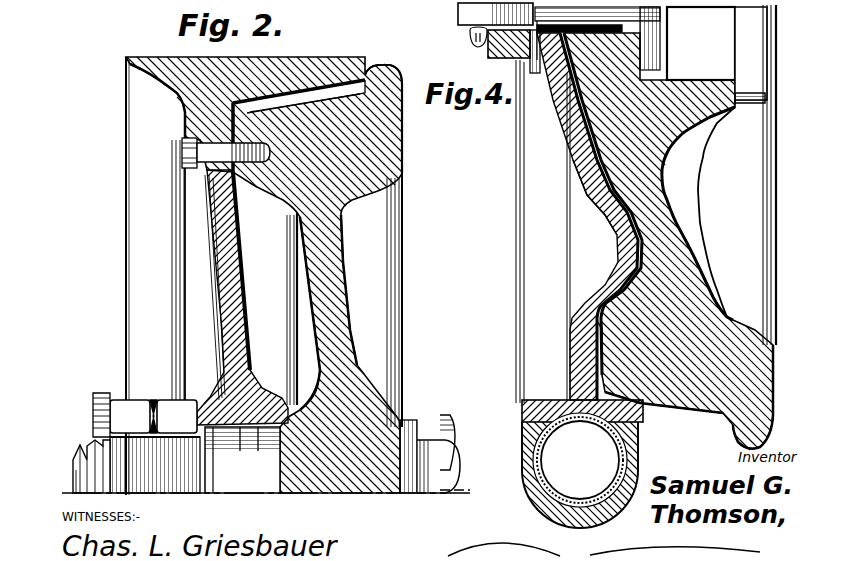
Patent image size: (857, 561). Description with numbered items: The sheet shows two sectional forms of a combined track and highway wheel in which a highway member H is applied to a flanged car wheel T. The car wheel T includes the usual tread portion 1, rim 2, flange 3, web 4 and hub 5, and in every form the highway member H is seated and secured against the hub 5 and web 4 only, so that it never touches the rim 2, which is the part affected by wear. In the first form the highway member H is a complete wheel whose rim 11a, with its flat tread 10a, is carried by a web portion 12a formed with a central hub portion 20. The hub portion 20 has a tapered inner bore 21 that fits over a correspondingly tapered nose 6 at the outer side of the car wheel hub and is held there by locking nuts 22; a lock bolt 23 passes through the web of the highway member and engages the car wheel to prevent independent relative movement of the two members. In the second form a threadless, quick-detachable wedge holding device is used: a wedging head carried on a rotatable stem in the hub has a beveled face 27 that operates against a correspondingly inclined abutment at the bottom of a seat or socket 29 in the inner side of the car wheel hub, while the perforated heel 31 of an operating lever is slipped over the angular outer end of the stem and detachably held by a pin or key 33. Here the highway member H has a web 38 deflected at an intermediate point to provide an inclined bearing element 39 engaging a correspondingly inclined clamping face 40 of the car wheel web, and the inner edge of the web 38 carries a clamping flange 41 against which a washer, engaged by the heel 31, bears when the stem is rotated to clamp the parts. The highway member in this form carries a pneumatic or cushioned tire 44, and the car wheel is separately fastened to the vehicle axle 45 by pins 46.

In FIG. 2, the tread portion 1 is at (336, 60).
In FIG. 4, the tread portion 1 is at (707, 413).
In FIG. 2, the rim 2 is at (252, 97).
In FIG. 4, the rim 2 is at (645, 406).
In FIG. 2, the flange 3 is at (390, 66).
In FIG. 4, the flange 3 is at (754, 427).
In FIG. 2, the web 4 is at (330, 298).
In FIG. 4, the web 4 is at (681, 264).
In FIG. 2, the hub 5 is at (374, 427).
In FIG. 4, the hub 5 is at (667, 127).
In FIG. 2, the tapered nose 6 is at (242, 460).
In FIG. 2, the flat tread 10a is at (162, 57).
In FIG. 2, the rim 11a is at (286, 70).
In FIG. 2, the web portion 12a is at (226, 262).
In FIG. 2, the central hub portion 20 is at (215, 412).
In FIG. 2, the tapered inner bore 21 is at (265, 440).
In FIG. 2, the locking nuts 22 is at (120, 402).
In FIG. 2, the lock bolt 23 is at (205, 168).
In FIG. 4, the beveled face of wedging head 27 is at (662, 30).
In FIG. 4, the seat or socket 29 is at (665, 55).
In FIG. 4, the perforated heel 31 is at (497, 58).
In FIG. 4, the pin or key 33 is at (474, 40).
In FIG. 4, the web 38 is at (566, 322).
In FIG. 4, the inclined bearing element 39 is at (578, 162).
In FIG. 4, the inclined clamping face 40 is at (600, 176).
In FIG. 4, the clamping flange 41 is at (560, 96).
In FIG. 4, the pneumatic or cushioned tire 44 is at (530, 480).
In FIG. 4, the axle 45 is at (526, 410).
In FIG. 4, the pins 46 is at (758, 97).
In FIG. 2, the highway member H is at (119, 139).
In FIG. 4, the highway member H is at (508, 376).
In FIG. 2, the flanged car wheel T is at (411, 184).
In FIG. 4, the flanged car wheel T is at (786, 229).